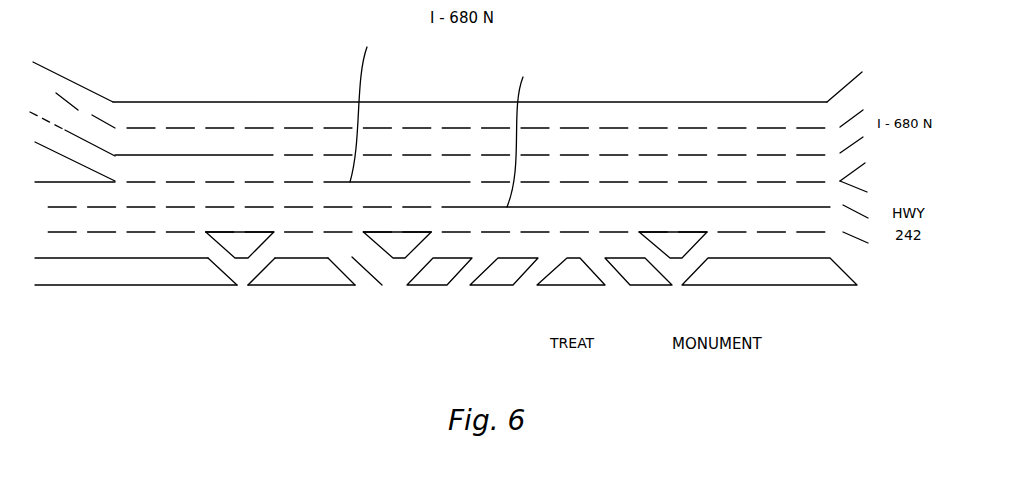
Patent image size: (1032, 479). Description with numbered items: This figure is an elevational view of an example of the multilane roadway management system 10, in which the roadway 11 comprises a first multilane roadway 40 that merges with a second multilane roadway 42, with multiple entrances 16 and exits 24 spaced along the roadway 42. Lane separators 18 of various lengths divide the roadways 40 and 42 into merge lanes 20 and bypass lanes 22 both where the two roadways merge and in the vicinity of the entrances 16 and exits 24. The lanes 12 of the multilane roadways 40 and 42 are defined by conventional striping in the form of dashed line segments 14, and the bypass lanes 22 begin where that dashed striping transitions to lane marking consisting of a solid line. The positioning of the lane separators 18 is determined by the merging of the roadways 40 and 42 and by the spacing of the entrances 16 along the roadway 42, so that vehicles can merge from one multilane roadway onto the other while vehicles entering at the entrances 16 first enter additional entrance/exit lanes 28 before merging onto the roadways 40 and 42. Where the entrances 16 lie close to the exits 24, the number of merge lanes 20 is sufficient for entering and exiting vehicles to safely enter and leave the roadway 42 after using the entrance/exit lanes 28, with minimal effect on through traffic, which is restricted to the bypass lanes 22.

The multilane roadway management system 10 is at (588, 61).
The roadway 11 is at (283, 102).
The lanes 12 is at (683, 177).
The dashed line segments 14 is at (63, 102).
The entrances 16 is at (398, 277).
The lane separators 18 is at (445, 118).
The merge lanes 20 is at (432, 210).
The bypass lanes 22 is at (472, 158).
The exits 24 is at (243, 278).
The entrance/exit lanes 28 is at (251, 248).
The first multilane roadway 40 is at (102, 92).
The second multilane roadway 42 is at (88, 277).